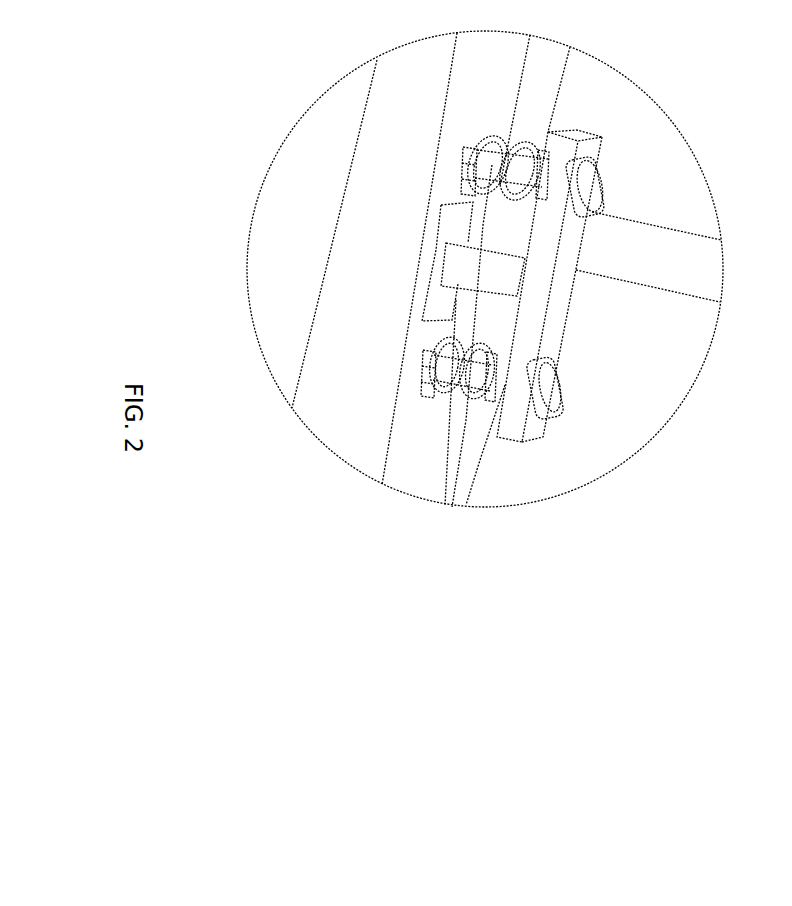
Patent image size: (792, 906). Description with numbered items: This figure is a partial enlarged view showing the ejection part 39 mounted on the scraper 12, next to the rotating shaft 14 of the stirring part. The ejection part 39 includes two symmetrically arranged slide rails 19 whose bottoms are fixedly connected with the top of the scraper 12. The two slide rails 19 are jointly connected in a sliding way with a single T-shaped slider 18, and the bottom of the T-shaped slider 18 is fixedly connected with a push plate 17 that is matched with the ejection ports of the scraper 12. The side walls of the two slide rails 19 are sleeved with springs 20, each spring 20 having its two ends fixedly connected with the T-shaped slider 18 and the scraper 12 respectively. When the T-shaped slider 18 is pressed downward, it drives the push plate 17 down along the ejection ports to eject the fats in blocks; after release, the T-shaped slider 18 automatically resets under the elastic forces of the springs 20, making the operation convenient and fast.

The scraper 12 is at (350, 293).
The rotating shaft 14 is at (646, 257).
The push plate 17 is at (438, 293).
The T-shaped slider 18 is at (532, 283).
The slide rails 19 is at (621, 394).
The springs 20 is at (484, 395).
The ejection part 39 is at (494, 412).